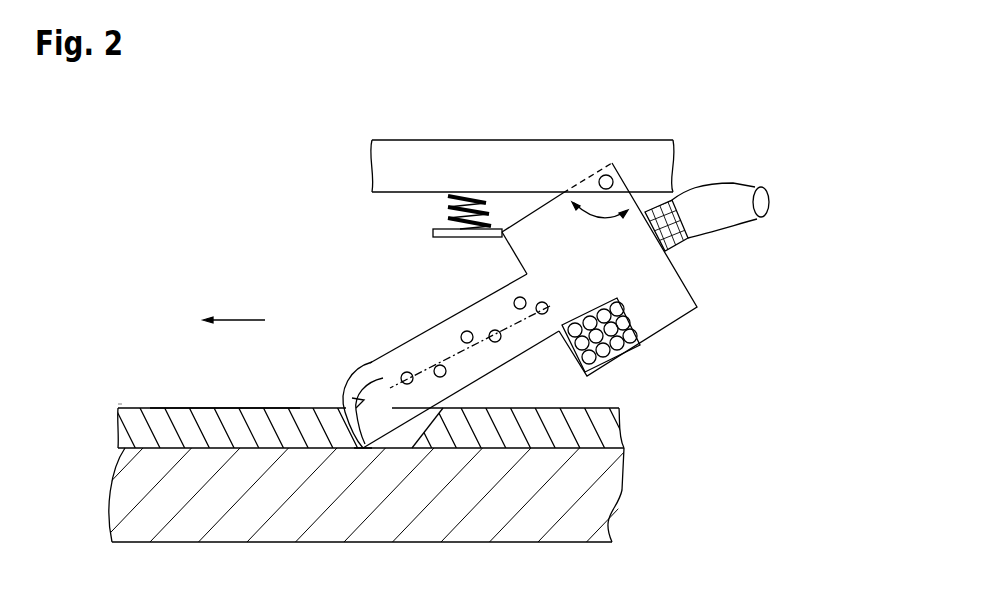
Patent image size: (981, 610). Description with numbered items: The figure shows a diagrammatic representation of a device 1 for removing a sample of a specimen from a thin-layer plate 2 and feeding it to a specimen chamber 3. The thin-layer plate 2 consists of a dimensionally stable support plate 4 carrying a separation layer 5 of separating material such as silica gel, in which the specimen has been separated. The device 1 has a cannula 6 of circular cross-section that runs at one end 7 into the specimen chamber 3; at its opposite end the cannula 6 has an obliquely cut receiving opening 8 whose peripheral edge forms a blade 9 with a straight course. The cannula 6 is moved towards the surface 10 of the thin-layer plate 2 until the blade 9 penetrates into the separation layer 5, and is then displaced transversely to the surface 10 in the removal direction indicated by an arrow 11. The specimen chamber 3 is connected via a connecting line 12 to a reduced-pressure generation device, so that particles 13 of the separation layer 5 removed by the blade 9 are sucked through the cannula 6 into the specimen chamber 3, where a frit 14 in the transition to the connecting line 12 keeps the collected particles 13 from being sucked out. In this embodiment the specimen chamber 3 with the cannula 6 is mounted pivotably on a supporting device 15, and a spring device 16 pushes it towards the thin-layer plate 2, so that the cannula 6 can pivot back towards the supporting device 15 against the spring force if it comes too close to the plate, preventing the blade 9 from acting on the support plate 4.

The device 1 is at (403, 114).
The thin-layer plate 2 is at (150, 368).
The specimen chamber 3 is at (689, 303).
The support plate 4 is at (148, 488).
The separation layer 5 is at (148, 430).
The cannula 6 is at (372, 361).
The end 7 is at (512, 266).
The receiving opening 8 is at (335, 395).
The blade 9 is at (361, 458).
The surface 10 is at (224, 406).
The arrow 11 is at (228, 318).
The connecting line 12 is at (738, 228).
The particles 13 is at (408, 372).
The frit 14 is at (684, 248).
The supporting device 15 is at (380, 168).
The spring device 16 is at (428, 218).